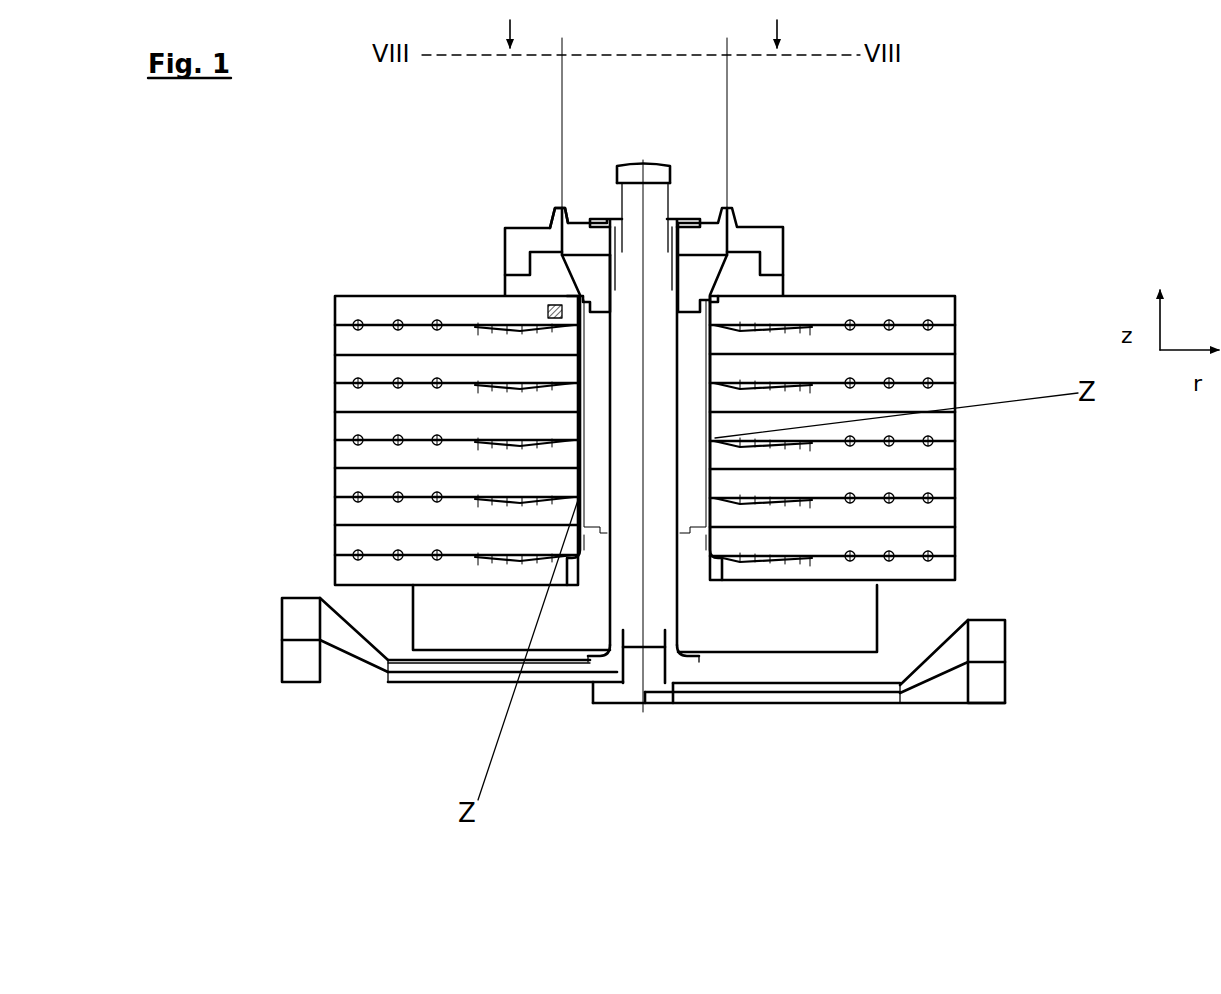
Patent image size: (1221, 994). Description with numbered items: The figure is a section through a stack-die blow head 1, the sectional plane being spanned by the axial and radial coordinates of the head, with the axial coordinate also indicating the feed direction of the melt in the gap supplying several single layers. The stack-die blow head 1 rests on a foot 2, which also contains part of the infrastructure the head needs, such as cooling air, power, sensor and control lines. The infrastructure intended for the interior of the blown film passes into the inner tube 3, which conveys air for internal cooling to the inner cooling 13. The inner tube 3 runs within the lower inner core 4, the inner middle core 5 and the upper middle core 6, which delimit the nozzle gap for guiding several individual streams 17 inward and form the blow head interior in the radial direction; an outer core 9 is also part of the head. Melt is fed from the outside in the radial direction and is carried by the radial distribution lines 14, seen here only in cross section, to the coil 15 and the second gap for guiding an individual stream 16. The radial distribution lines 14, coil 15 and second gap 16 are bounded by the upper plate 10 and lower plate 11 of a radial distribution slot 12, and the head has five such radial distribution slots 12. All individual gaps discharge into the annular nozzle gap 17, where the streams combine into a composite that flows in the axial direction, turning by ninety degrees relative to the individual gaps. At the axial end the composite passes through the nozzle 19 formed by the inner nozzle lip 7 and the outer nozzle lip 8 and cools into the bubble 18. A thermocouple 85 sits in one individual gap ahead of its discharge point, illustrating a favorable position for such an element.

The stack-die blow head 1 is at (912, 245).
The foot and feed part 2 is at (420, 705).
The inner tube 3 is at (651, 318).
The lower inner core 4 is at (870, 610).
The inner middle core 5 is at (691, 336).
The upper middle core 6 is at (691, 276).
The inner nozzle lip 7 is at (581, 222).
The outer nozzle lip 8 is at (515, 246).
The outer core 9 is at (512, 284).
The upper plate 10 is at (933, 306).
The lower plate 11 is at (930, 340).
The radial distribution slot 12 is at (330, 412).
The inner cooling 13 is at (682, 156).
The radial distribution lines 14 is at (932, 444).
The coil 15 is at (815, 330).
The second gap for guiding an individual stream 16 is at (476, 310).
The nozzle gap for guiding several individual streams 17 is at (706, 532).
The bubble 18 is at (556, 83).
The nozzle 19 is at (555, 200).
The thermocouple 85 is at (548, 312).